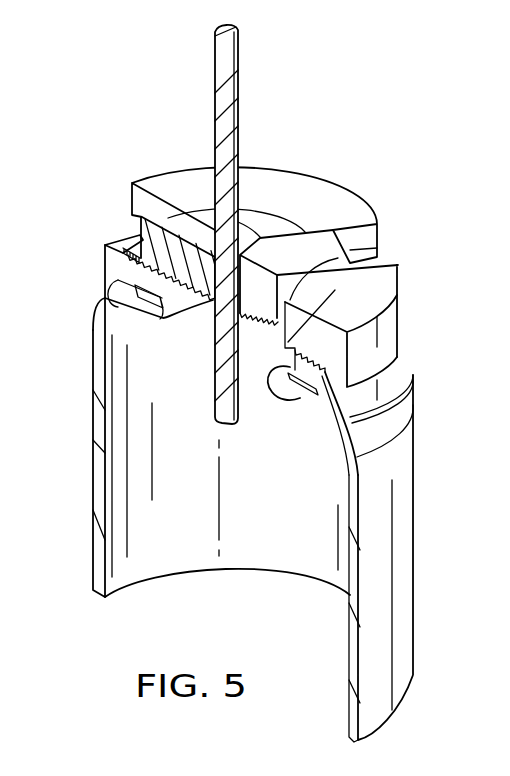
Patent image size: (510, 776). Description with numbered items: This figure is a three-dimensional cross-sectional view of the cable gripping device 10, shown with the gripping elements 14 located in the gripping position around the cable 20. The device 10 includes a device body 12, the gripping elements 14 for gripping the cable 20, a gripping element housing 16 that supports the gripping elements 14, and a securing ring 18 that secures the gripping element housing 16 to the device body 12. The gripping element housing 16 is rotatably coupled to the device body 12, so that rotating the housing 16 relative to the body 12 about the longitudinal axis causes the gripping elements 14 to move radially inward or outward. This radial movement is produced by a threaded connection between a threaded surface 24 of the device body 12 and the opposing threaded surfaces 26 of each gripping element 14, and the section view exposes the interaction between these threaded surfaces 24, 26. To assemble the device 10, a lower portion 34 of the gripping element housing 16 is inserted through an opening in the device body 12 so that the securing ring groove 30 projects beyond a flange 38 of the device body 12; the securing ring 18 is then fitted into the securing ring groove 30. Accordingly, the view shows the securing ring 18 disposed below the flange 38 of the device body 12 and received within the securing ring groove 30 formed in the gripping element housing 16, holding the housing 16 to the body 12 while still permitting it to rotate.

The cable gripping device 10 is at (370, 72).
The device body 12 is at (92, 473).
The gripping elements 14 is at (325, 240).
The gripping element housing 16 is at (305, 190).
The securing ring 18 is at (106, 300).
The cable 20 is at (215, 78).
The threaded surface 24 is at (133, 247).
The threaded surfaces 26 is at (190, 303).
The securing ring groove 30 is at (320, 388).
The lower portion 34 is at (177, 318).
The flange 38 is at (283, 368).